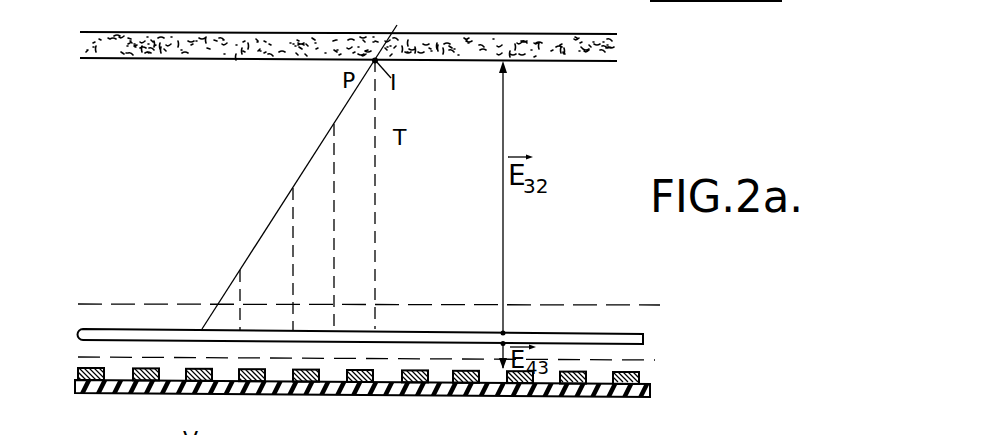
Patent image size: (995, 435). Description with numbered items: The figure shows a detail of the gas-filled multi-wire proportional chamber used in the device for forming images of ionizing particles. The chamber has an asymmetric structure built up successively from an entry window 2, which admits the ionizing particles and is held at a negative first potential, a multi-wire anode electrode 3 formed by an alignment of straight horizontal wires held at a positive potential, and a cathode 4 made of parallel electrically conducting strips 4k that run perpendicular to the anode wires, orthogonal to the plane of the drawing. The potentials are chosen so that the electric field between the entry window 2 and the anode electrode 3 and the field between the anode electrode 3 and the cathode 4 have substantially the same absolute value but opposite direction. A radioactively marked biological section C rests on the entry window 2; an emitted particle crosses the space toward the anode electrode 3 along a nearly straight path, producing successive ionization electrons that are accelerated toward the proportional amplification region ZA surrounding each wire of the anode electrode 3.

The entry window 2 is at (342, 53).
The multi-wire anode electrode 3 is at (607, 337).
The cathode 4 is at (650, 392).
The electrically conducting strips 4k is at (368, 384).
The biological section C is at (138, 43).
The proportional amplification region ZA is at (120, 318).